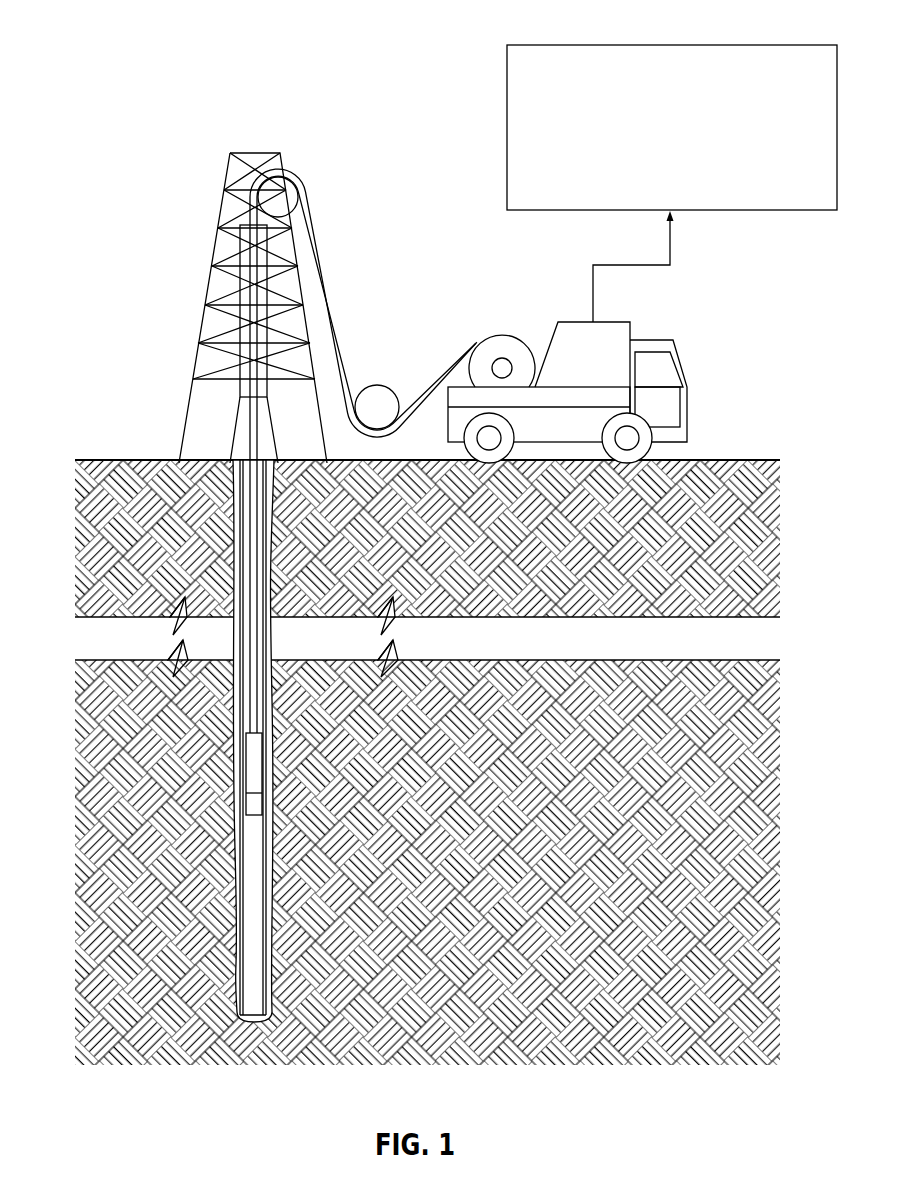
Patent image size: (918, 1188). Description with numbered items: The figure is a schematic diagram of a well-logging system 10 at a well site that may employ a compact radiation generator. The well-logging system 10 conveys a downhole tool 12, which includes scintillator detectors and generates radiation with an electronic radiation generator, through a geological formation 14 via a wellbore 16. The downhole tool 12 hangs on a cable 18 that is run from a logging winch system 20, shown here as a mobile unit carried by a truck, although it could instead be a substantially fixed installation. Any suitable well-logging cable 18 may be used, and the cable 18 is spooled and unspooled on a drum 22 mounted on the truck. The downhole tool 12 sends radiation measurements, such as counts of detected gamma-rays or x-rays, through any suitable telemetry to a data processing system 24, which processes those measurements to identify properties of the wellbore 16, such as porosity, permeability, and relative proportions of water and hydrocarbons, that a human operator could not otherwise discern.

The well-logging system 10 is at (130, 183).
The downhole tool 12 is at (243, 756).
The geological formation 14 is at (90, 820).
The wellbore 16 is at (230, 516).
The cable 18 is at (341, 292).
The logging winch system 20 is at (569, 310).
The drum 22 is at (503, 334).
The data processing system 24 is at (790, 45).